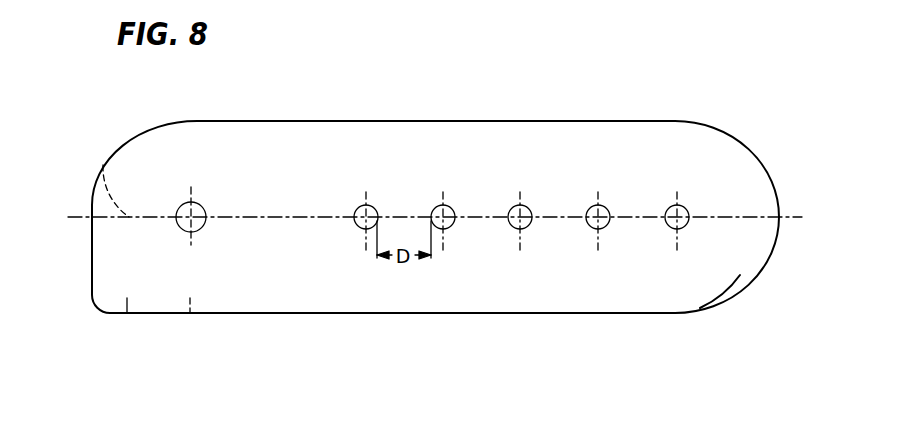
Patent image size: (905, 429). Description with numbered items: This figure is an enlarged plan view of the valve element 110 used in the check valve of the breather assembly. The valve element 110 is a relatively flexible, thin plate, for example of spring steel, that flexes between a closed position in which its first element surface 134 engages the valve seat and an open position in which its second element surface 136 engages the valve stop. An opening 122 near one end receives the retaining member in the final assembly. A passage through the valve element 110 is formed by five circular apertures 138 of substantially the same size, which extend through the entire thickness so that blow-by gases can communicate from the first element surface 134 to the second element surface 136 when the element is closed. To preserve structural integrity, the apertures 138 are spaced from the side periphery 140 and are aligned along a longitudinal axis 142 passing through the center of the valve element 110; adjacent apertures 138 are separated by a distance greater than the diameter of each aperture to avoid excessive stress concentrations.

The valve element 110 is at (284, 137).
The opening 122 is at (183, 207).
The apertures 138 is at (438, 204).
The first element surface 134 is at (190, 313).
The second element surface 136 is at (127, 313).
The side periphery 140 is at (720, 303).
The longitudinal axis 142 is at (103, 165).